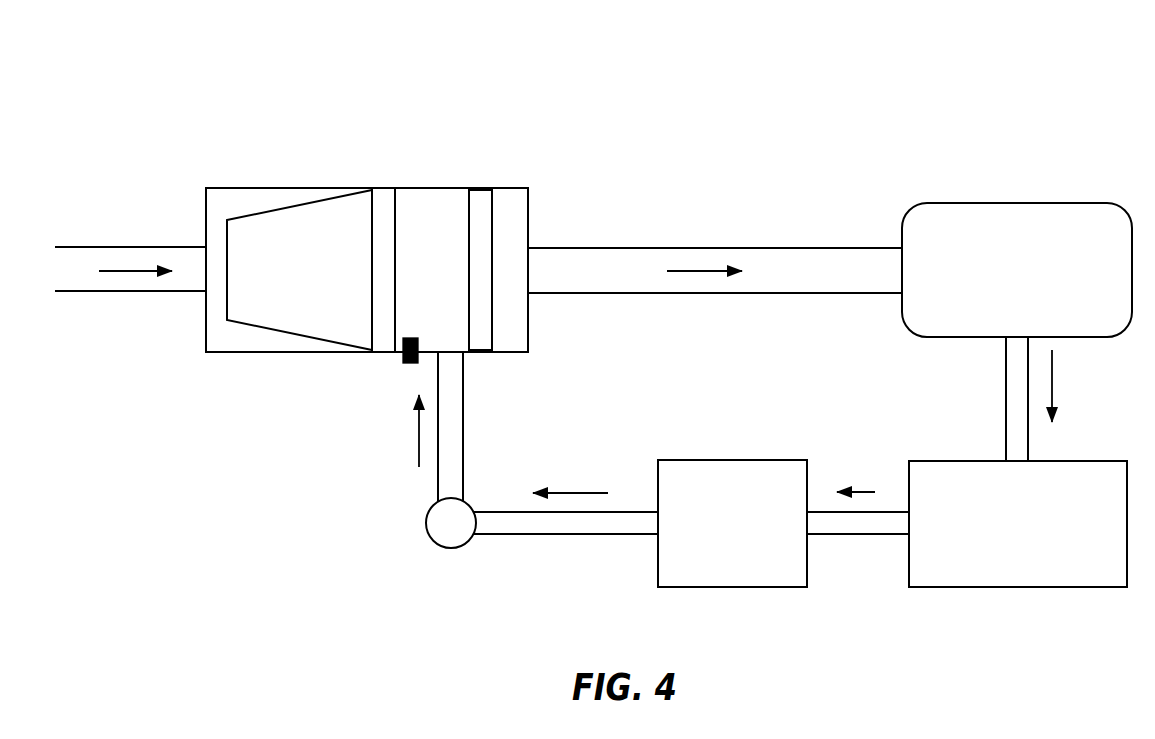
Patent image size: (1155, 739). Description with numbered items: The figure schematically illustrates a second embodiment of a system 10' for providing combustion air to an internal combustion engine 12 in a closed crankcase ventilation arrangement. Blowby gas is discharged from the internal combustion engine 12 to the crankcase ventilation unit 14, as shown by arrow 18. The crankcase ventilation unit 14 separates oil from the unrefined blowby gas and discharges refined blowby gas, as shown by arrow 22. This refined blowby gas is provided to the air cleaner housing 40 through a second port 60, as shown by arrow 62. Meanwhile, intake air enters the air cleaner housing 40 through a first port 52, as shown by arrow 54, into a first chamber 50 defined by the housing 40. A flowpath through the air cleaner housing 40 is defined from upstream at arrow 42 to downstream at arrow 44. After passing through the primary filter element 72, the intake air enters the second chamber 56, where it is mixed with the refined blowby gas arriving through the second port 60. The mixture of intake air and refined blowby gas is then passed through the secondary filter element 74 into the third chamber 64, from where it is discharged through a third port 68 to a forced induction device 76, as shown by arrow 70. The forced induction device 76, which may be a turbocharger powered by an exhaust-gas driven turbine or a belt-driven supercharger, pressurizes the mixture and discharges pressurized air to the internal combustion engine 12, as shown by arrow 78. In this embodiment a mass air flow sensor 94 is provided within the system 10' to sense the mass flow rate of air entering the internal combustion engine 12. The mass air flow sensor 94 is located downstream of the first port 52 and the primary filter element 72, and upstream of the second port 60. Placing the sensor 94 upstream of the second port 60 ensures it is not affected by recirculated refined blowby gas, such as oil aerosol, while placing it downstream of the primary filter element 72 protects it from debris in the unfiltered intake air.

The system 10' is at (804, 75).
The internal combustion engine 12 is at (1006, 588).
The crankcase ventilation unit 14 is at (740, 588).
The arrow 18 is at (854, 487).
The arrow 22 is at (566, 492).
The air cleaner housing 40 is at (273, 354).
The arrow 42 is at (207, 176).
The arrow 44 is at (532, 363).
The first chamber 50 is at (223, 340).
The first port 52 is at (206, 246).
The arrow 54 is at (140, 272).
The second chamber 56 is at (432, 210).
The second port 60 is at (466, 355).
The arrow 62 is at (413, 443).
The third chamber 64 is at (513, 210).
The third port 68 is at (528, 293).
The arrow 70 is at (700, 271).
The primary filter element 72 is at (284, 232).
The secondary filter element 74 is at (478, 208).
The forced induction device 76 is at (1013, 202).
The arrow 78 is at (1053, 392).
The mass air flow sensor 94 is at (402, 358).